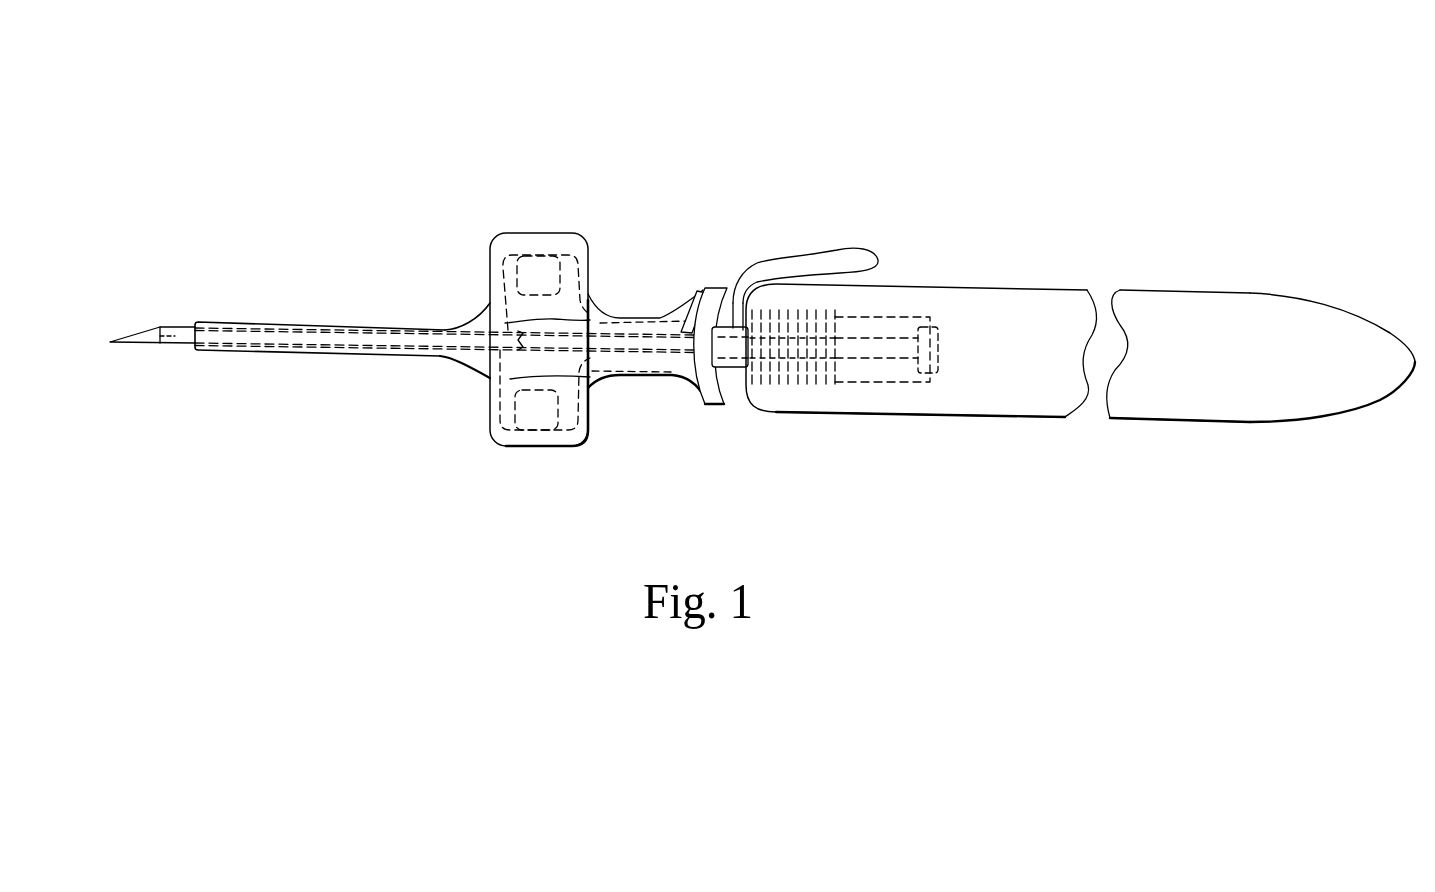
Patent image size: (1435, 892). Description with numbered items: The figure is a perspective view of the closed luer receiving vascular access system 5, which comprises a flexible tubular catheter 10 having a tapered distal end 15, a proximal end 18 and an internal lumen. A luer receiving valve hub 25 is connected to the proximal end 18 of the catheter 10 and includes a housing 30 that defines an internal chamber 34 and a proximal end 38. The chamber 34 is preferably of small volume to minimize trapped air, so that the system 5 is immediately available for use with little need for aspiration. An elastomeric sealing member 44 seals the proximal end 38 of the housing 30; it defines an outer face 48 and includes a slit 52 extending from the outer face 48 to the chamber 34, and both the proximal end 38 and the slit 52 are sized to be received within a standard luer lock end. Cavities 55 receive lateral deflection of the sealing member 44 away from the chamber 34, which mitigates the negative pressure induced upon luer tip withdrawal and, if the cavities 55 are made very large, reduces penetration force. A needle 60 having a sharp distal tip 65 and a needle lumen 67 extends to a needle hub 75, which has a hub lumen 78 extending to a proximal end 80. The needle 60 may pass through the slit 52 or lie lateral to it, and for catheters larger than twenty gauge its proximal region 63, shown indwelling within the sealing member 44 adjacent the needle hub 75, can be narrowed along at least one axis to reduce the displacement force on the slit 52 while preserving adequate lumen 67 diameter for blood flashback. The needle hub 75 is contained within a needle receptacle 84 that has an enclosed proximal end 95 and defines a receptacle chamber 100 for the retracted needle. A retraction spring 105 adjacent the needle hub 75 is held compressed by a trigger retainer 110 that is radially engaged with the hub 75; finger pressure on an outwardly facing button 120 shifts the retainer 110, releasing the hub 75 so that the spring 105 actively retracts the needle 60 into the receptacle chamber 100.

The closed luer receiving vascular access system 5 is at (236, 136).
The flexible tubular catheter 10 is at (371, 325).
The tapered distal end 15 is at (196, 351).
The proximal end 18 is at (475, 372).
The luer receiving valve hub 25 is at (567, 233).
The housing 30 is at (571, 447).
The internal chamber 34 is at (612, 317).
The proximal end 38 is at (697, 386).
The elastomeric sealing member 44 is at (722, 290).
The outer face 48 is at (729, 370).
The slit 52 is at (640, 352).
The cavities 55 is at (537, 266).
The needle 60 is at (178, 328).
The proximal region of the needle 63 is at (660, 317).
The sharp distal tip 65 is at (114, 340).
The needle lumen 67 is at (367, 348).
The needle hub 75 is at (898, 316).
The hub lumen 78 is at (911, 355).
The proximal end 80 is at (938, 345).
The needle receptacle 84 is at (1184, 290).
The enclosed proximal end 95 is at (1403, 388).
The receptacle chamber 100 is at (1208, 378).
The retraction spring 105 is at (795, 383).
The trigger retainer 110 is at (746, 292).
The button 120 is at (860, 250).